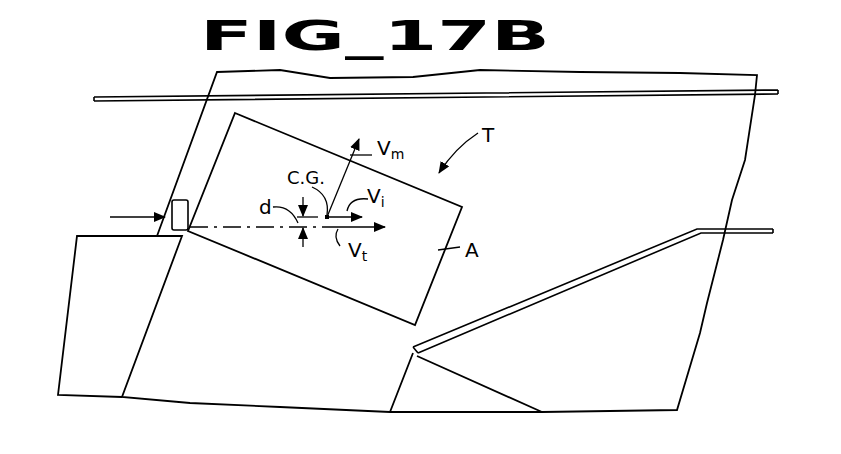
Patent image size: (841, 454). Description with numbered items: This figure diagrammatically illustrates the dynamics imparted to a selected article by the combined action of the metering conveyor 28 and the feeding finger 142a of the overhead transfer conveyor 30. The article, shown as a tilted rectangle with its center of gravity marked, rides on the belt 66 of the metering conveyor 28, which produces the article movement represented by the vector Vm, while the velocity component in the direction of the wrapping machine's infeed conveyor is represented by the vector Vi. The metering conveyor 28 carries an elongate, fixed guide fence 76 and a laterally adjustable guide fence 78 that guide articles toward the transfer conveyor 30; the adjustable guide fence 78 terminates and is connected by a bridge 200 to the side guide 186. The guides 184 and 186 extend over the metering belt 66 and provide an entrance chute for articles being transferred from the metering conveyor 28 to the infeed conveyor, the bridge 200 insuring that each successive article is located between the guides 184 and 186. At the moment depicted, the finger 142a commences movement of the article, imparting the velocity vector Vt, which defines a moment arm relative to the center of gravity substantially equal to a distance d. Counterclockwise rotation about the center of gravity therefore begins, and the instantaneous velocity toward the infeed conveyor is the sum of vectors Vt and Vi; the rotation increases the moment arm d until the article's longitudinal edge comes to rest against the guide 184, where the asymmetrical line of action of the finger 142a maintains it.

The metering conveyor 28 is at (188, 405).
The fixed guide fence 76 is at (122, 307).
The belt 66 is at (302, 347).
The laterally adjustable guide fence 78 is at (450, 404).
The guide 184 is at (770, 96).
The guide 186 is at (742, 230).
The bridge 200 is at (518, 308).
The feeding finger 142a is at (181, 200).
The transfer conveyor 30 is at (168, 201).